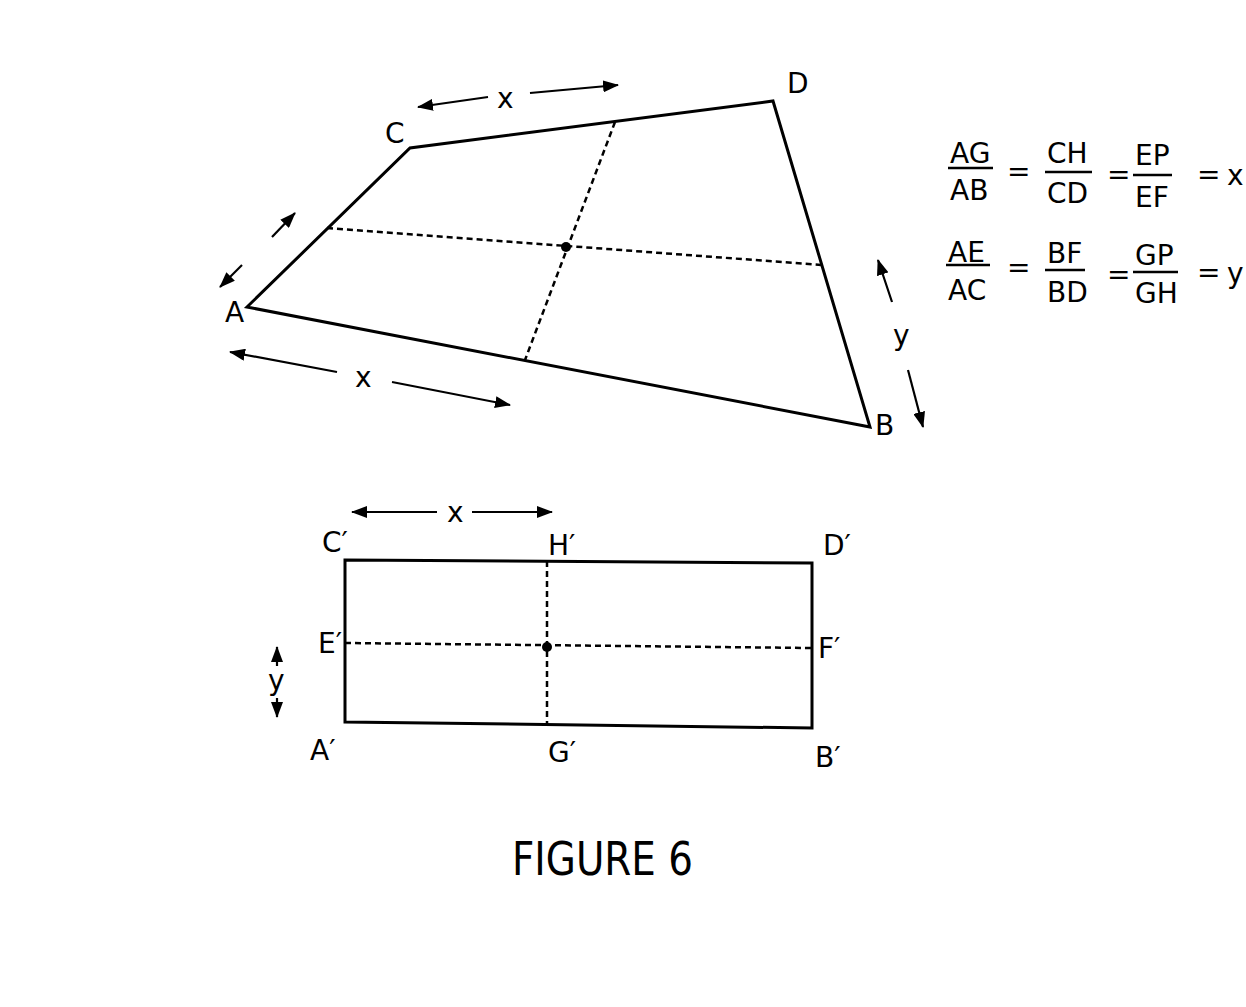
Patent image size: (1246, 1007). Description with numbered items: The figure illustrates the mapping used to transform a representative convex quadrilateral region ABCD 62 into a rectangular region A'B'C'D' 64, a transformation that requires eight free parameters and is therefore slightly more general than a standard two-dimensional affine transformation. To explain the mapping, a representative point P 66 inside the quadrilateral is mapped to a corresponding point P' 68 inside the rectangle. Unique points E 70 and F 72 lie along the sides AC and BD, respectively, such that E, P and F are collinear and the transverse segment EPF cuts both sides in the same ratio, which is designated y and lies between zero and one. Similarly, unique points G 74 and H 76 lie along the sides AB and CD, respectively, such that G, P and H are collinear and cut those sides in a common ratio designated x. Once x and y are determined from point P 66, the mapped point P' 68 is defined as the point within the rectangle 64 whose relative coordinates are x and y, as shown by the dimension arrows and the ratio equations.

The convex quadrilateral region ABCD 62 is at (380, 185).
The rectangular region A'B'C'D' 64 is at (360, 592).
The point P 66 is at (593, 207).
The point P' 68 is at (570, 613).
The point E 70 is at (305, 200).
The point F 72 is at (842, 247).
The point G 74 is at (528, 395).
The point H 76 is at (627, 80).